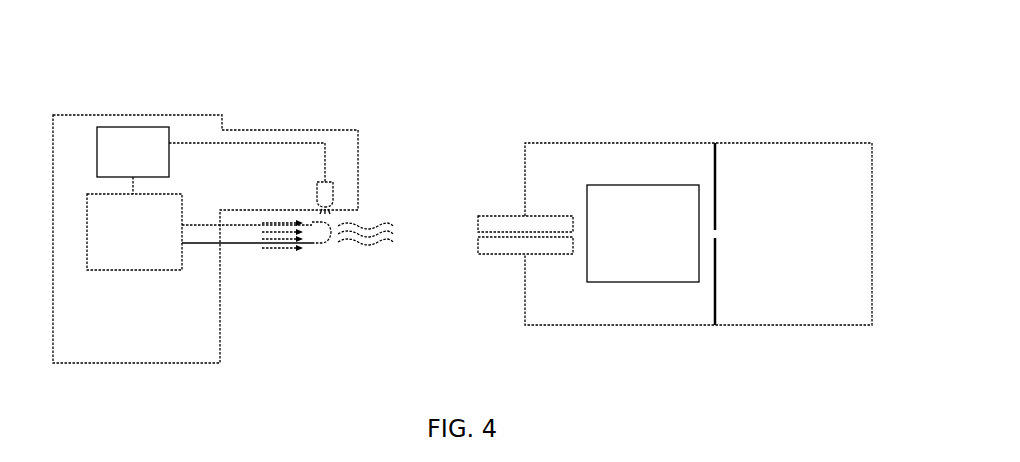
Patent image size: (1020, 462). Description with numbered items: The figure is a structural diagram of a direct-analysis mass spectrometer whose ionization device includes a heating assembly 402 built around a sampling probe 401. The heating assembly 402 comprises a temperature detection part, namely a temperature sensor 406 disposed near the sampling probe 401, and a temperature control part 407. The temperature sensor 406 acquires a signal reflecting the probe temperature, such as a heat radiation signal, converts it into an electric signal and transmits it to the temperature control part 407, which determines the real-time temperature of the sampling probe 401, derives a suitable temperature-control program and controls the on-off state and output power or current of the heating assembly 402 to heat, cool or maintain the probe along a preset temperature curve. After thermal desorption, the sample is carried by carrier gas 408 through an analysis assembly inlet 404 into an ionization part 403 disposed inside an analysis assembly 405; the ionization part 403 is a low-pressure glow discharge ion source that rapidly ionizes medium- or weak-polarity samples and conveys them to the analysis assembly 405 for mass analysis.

The sampling probe 401 is at (323, 246).
The heating assembly 402 is at (128, 84).
The ionization part 403 is at (645, 185).
The analysis assembly inlet 404 is at (478, 256).
The analysis assembly 405 is at (773, 127).
The temperature sensor 406 is at (334, 192).
The temperature control part 407 is at (148, 138).
The carrier gas 408 is at (265, 252).